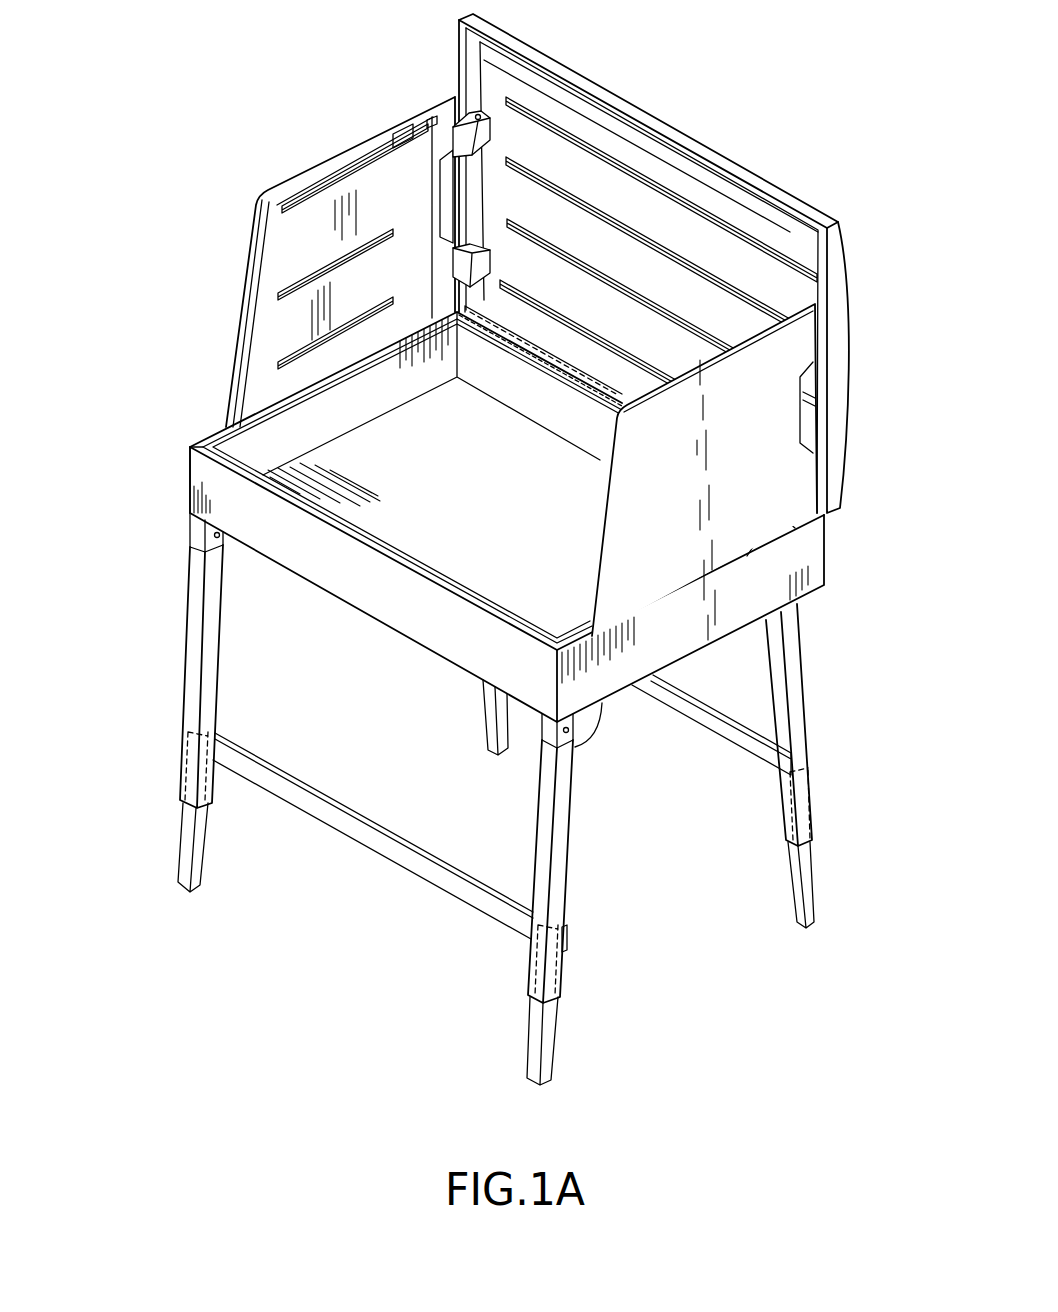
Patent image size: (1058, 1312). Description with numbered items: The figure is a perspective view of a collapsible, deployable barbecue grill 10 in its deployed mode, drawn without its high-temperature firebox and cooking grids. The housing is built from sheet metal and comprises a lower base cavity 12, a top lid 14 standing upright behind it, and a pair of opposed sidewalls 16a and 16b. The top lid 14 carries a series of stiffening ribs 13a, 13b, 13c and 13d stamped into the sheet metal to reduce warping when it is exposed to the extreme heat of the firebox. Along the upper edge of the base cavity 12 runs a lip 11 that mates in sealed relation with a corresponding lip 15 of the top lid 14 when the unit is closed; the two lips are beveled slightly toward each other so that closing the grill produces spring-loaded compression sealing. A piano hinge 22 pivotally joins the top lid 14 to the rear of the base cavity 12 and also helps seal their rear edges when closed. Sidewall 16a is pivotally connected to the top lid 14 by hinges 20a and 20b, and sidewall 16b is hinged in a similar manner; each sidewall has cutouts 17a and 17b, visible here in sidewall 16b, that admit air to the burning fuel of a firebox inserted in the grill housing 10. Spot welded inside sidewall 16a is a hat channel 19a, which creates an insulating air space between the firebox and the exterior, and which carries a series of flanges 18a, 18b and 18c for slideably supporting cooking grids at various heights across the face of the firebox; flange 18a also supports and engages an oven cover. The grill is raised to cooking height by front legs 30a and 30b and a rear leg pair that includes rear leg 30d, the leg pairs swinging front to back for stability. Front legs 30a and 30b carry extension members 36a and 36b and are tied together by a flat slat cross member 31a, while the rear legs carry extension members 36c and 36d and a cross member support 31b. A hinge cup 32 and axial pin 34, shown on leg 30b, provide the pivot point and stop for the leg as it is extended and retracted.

The barbecue grill 10 is at (274, 129).
The lip 11 is at (377, 547).
The lower base cavity 12 is at (196, 446).
The stiffening rib 13a is at (653, 187).
The stiffening rib 13b is at (653, 243).
The stiffening rib 13c is at (653, 304).
The stiffening rib 13d is at (653, 367).
The top lid 14 is at (847, 260).
The lip 15 is at (546, 80).
The sidewall 16a is at (242, 313).
The sidewall 16b is at (603, 547).
The cutout 17a is at (792, 546).
The cutout 17b is at (816, 420).
The flange 18a is at (378, 166).
The flange 18b is at (347, 267).
The flange 18c is at (338, 322).
The hat channel 19a is at (313, 247).
The hinge 20a is at (490, 121).
The hinge 20b is at (490, 254).
The piano hinge 22 is at (547, 360).
The front leg 30a is at (187, 660).
The front leg 30b is at (573, 863).
The rear leg 30d is at (802, 697).
The cross member 31a is at (470, 873).
The cross member support 31b is at (720, 710).
The hinge cup 32 is at (597, 715).
The axial pin 34 is at (573, 733).
The extension member 36a is at (180, 838).
The extension member 36b is at (553, 1015).
The extension member 36c is at (480, 710).
The extension member 36d is at (797, 883).